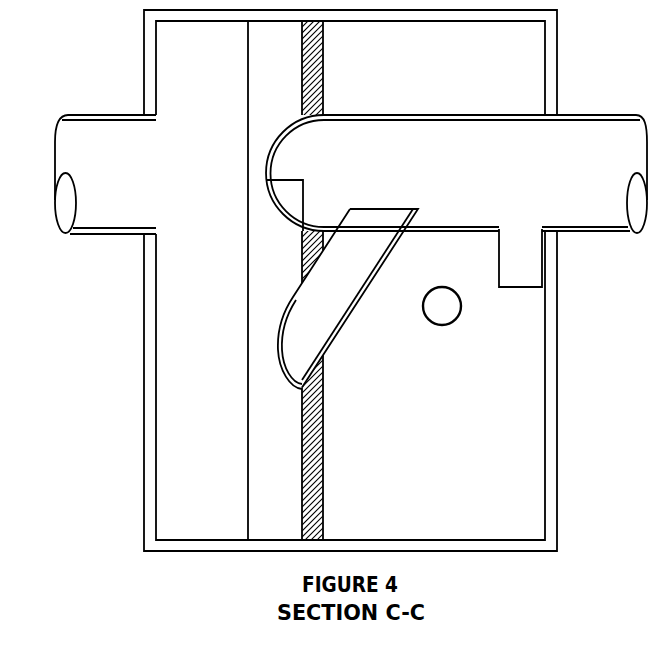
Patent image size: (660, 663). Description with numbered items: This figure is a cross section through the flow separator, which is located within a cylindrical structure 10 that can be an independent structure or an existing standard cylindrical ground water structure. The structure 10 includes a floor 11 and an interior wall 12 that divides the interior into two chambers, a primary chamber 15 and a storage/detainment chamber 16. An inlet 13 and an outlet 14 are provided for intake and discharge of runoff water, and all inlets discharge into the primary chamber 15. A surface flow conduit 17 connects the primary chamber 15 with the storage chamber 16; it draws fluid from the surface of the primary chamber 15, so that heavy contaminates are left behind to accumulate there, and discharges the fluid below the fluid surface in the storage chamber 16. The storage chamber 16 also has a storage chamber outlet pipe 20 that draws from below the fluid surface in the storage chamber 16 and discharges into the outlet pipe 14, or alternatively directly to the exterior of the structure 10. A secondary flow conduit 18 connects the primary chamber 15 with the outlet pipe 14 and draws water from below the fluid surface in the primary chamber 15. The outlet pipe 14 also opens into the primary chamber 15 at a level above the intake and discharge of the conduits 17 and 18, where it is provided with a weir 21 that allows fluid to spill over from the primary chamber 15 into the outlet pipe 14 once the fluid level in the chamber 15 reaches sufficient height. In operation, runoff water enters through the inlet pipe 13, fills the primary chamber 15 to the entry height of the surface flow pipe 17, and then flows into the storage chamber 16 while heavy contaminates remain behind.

The cylindrical structure 10 is at (118, 363).
The floor 11 is at (403, 538).
The interior wall 12 is at (247, 81).
The inlet 13 is at (115, 113).
The outlet 14 is at (587, 113).
The primary chamber 15 is at (200, 470).
The storage/detainment chamber 16 is at (470, 473).
The surface flow conduit 17 is at (451, 326).
The secondary flow conduit 18 is at (328, 336).
The storage chamber outlet pipe 20 is at (528, 269).
The weir 21 is at (305, 195).